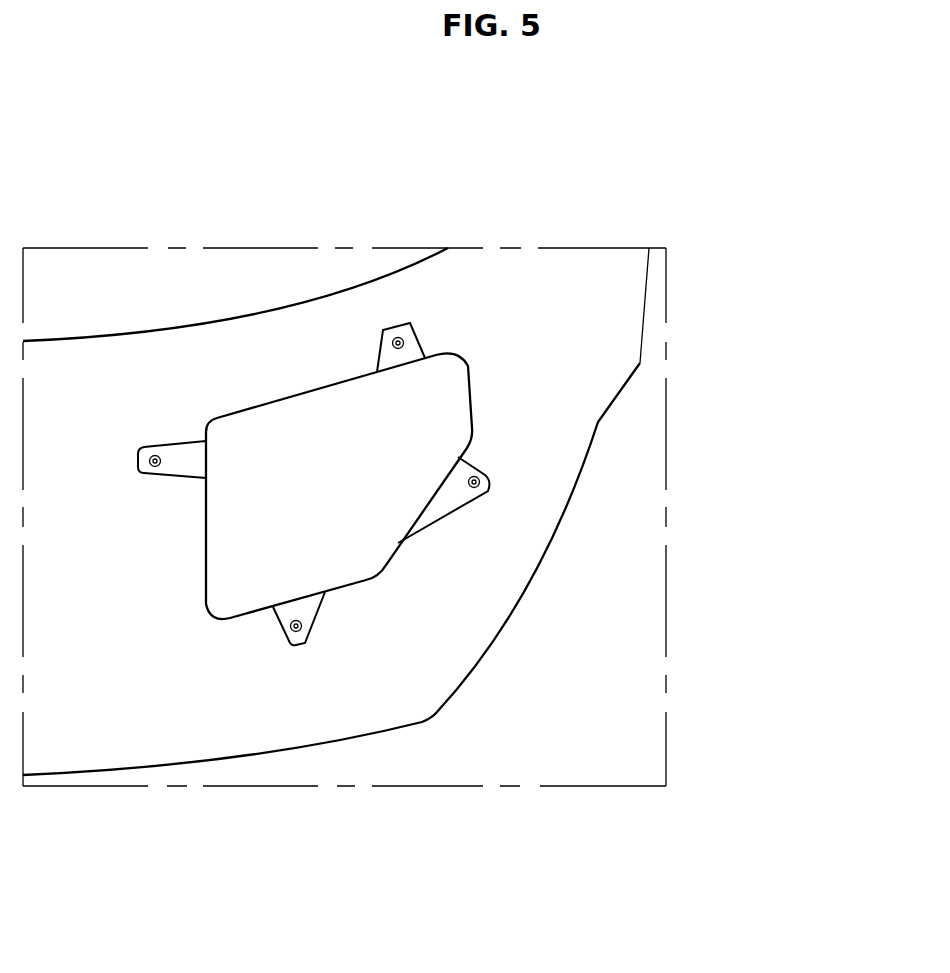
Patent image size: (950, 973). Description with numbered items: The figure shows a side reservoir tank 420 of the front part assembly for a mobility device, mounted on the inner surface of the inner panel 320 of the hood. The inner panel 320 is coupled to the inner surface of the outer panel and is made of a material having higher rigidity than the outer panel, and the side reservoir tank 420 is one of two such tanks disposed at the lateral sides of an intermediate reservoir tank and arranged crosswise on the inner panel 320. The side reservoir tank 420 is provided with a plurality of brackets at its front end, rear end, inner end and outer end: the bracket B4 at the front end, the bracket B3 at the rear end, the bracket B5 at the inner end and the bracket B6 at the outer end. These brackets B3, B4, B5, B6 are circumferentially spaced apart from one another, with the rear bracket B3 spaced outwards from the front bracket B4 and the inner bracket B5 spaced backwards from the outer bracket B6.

The inner panel 320 is at (400, 637).
The side reservoir tank 420 is at (302, 468).
The bracket B3 is at (412, 345).
The bracket B4 is at (283, 618).
The bracket B5 is at (185, 457).
The bracket B6 is at (443, 505).